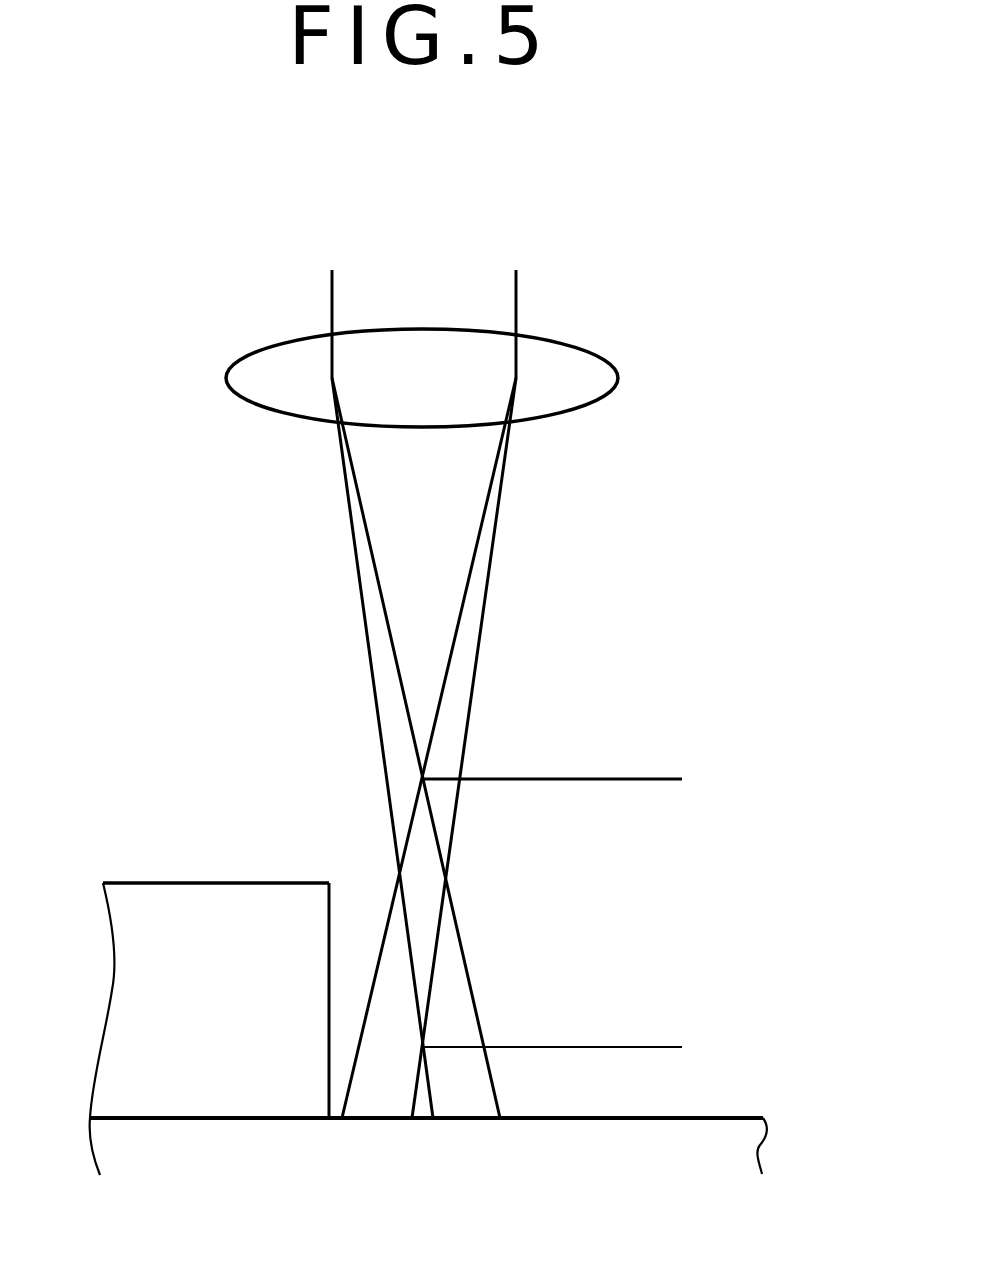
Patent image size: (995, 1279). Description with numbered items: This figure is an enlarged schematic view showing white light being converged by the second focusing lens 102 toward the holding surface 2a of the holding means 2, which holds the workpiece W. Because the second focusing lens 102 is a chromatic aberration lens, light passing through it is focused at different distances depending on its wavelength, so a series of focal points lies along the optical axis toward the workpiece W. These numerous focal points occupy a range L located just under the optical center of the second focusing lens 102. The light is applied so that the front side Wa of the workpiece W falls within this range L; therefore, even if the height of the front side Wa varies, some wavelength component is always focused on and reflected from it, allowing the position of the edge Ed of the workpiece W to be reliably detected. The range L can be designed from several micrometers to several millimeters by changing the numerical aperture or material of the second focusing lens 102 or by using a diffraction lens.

The second focusing lens 102 is at (618, 376).
The holding means 2 is at (747, 1147).
The holding surface 2a is at (718, 1117).
The workpiece W is at (133, 988).
The front side of the workpiece Wa is at (170, 882).
The edge Ed is at (329, 883).
The range L is at (618, 779).